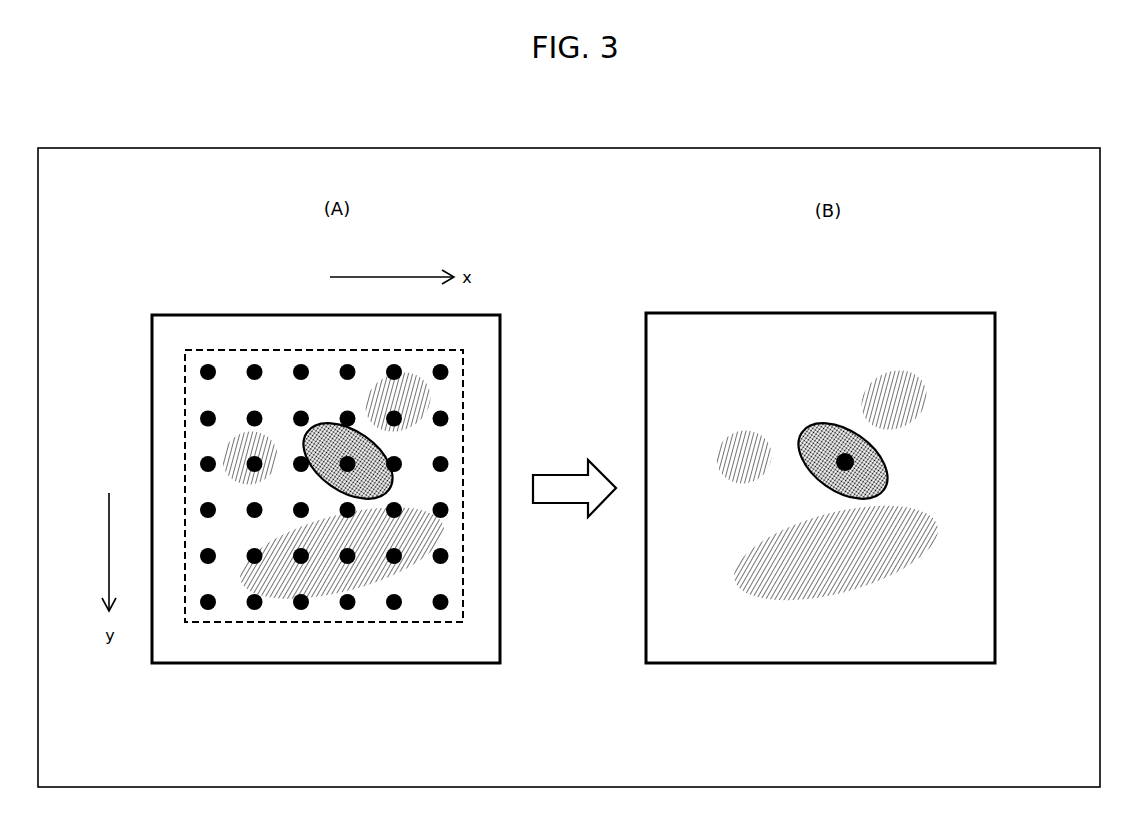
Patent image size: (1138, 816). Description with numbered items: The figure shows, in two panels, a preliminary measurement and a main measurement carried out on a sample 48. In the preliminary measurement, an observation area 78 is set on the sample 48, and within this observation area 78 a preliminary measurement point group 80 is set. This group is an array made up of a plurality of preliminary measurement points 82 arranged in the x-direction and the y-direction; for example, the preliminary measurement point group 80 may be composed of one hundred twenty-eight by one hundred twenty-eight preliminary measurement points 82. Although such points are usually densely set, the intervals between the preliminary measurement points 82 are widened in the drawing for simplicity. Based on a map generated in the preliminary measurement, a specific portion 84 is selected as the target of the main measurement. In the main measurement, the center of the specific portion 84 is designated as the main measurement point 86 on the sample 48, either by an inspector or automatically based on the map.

The sample 48 is at (327, 665).
The observation area 78 is at (423, 623).
The preliminary measurement point group 80 is at (265, 439).
The preliminary measurement point 82 is at (200, 373).
The specific portion 84 is at (387, 476).
The main measurement point 86 is at (845, 462).